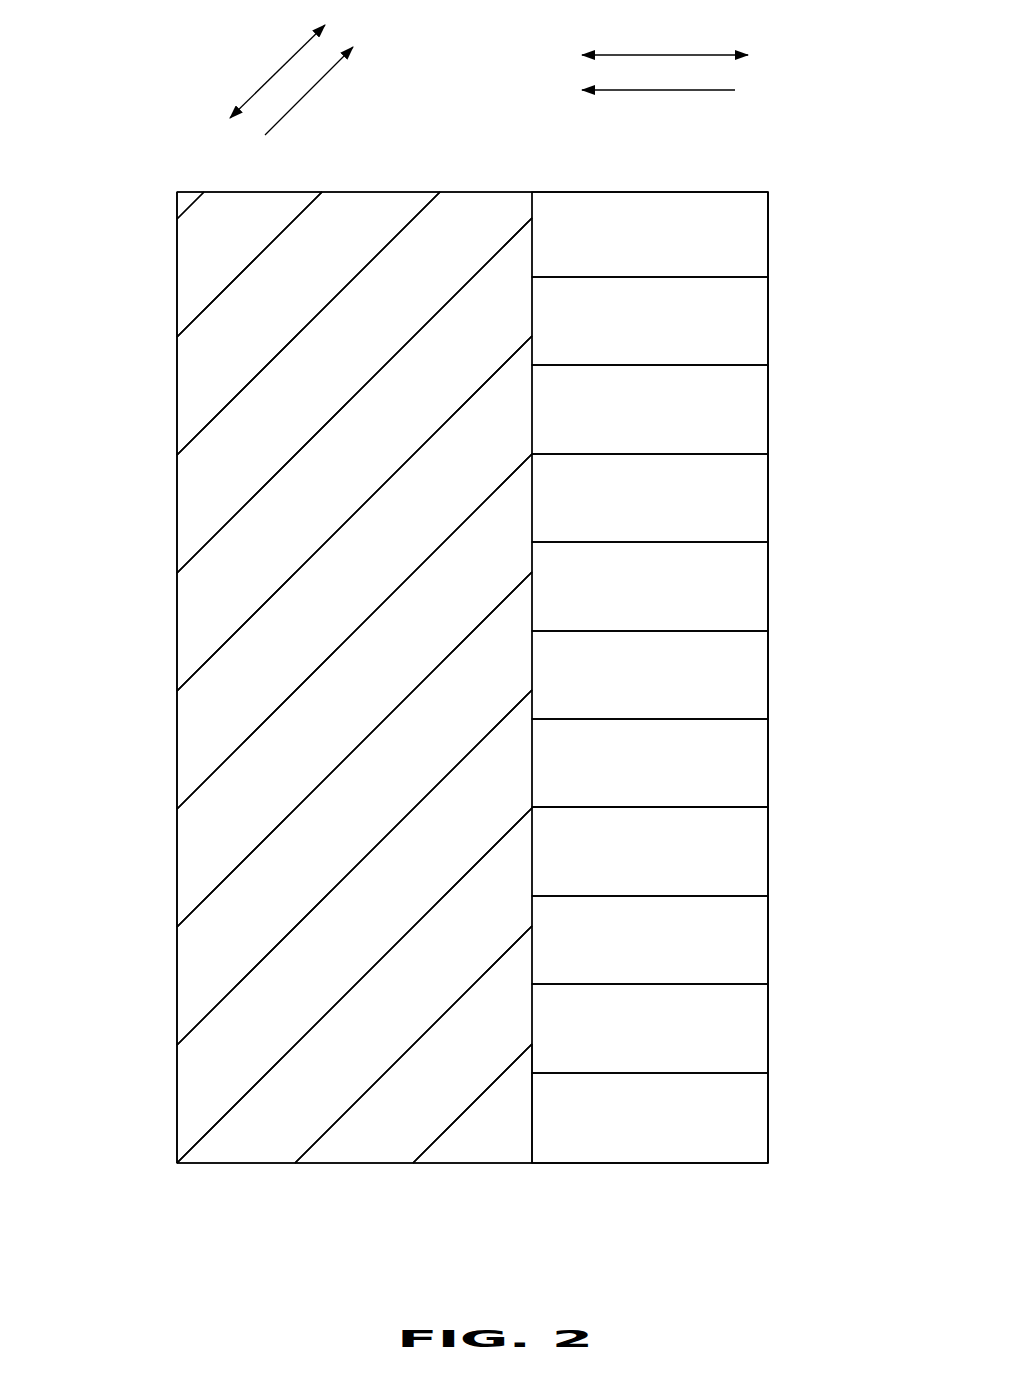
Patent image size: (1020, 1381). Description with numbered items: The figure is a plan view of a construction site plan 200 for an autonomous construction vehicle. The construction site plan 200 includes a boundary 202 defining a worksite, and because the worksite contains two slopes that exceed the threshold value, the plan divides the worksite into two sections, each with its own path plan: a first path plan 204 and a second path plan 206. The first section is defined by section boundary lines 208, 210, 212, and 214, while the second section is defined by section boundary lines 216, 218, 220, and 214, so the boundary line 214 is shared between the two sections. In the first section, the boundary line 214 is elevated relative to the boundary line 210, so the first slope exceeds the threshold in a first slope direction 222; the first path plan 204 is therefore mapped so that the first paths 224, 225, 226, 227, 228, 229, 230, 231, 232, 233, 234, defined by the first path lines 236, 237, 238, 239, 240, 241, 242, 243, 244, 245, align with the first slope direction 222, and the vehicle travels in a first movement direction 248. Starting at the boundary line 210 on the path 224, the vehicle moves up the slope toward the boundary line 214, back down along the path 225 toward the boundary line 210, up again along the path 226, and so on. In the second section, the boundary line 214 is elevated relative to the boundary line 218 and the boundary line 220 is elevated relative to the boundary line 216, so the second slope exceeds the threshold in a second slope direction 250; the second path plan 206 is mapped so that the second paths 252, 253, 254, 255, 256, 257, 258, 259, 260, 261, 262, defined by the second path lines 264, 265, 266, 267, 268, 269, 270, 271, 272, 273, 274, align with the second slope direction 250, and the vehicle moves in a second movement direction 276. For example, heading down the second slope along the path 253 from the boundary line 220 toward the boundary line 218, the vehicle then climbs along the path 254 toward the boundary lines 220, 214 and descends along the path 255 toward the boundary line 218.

The construction site plan 200 is at (141, 115).
The boundary 202 is at (769, 246).
The first path plan 204 is at (760, 842).
The second path plan 206 is at (206, 625).
The section boundary line 208 is at (703, 191).
The section boundary line 210 is at (771, 418).
The section boundary line 212 is at (645, 1166).
The section boundary line 214 is at (541, 237).
The section boundary line 216 is at (238, 1166).
The section boundary line 218 is at (176, 727).
The section boundary line 220 is at (398, 191).
The first slope direction 222 is at (631, 93).
The first path 224 is at (733, 250).
The first path 225 is at (733, 340).
The first path 226 is at (733, 427).
The first path 227 is at (733, 516).
The first path 228 is at (733, 604).
The first path 229 is at (733, 692).
The first path 230 is at (733, 780).
The first path 231 is at (733, 870).
The first path 232 is at (733, 958).
The first path 233 is at (733, 1046).
The first path 234 is at (733, 1134).
The first path line 236 is at (565, 277).
The first path line 237 is at (565, 365).
The first path line 238 is at (565, 454).
The first path line 239 is at (565, 542).
The first path line 240 is at (565, 631).
The first path line 241 is at (565, 719).
The first path line 242 is at (565, 807).
The first path line 243 is at (565, 896).
The first path line 244 is at (565, 984).
The first path line 245 is at (565, 1073).
The first movement direction 248 is at (652, 53).
The second slope direction 250 is at (283, 117).
The second path 252 is at (218, 280).
The second path 253 is at (338, 275).
The second path 254 is at (380, 339).
The second path 255 is at (395, 440).
The second path 256 is at (395, 559).
The second path 257 is at (403, 667).
The second path 258 is at (403, 791).
The second path 259 is at (403, 905).
The second path 260 is at (428, 1005).
The second path 261 is at (468, 1079).
The second path 262 is at (516, 1125).
The second path line 264 is at (203, 197).
The second path line 265 is at (193, 320).
The second path line 266 is at (200, 432).
The second path line 267 is at (200, 550).
The second path line 268 is at (203, 665).
The second path line 269 is at (207, 779).
The second path line 270 is at (212, 892).
The second path line 271 is at (222, 1000).
The second path line 272 is at (233, 1107).
The second path line 273 is at (335, 1125).
The second path line 274 is at (443, 1135).
The second movement direction 276 is at (283, 65).